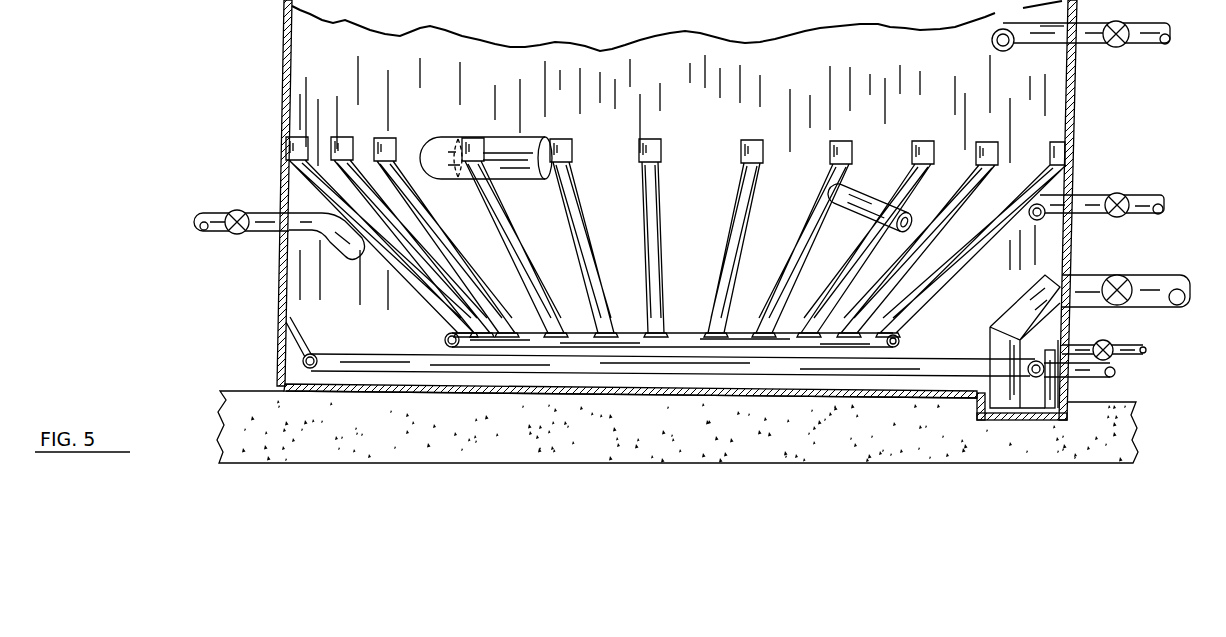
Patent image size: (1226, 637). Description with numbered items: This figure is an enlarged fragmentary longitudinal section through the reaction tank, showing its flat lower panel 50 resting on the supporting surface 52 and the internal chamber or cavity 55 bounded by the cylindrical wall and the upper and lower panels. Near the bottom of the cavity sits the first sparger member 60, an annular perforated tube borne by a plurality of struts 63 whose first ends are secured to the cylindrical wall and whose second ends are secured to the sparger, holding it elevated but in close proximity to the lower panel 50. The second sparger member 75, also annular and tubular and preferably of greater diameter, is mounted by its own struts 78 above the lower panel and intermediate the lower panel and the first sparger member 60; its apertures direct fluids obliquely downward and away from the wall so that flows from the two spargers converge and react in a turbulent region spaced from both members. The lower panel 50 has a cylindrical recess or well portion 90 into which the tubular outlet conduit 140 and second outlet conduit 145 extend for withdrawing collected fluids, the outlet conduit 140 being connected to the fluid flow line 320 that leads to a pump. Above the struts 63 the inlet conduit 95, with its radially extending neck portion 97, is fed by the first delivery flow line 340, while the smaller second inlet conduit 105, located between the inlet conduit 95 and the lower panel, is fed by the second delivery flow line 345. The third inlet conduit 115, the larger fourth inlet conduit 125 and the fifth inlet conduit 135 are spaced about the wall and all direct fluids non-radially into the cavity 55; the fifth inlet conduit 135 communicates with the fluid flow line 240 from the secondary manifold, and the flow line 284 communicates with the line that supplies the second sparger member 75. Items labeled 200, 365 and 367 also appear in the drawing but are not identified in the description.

The lower panel 50 is at (367, 388).
The supporting surface 52 is at (1120, 420).
The internal chamber or cavity 55 is at (347, 57).
The first sparger member 60 is at (678, 336).
The struts 63 is at (740, 181).
The second sparger member 75 is at (346, 356).
The struts 78 is at (301, 333).
The recess or well portion 90 is at (1003, 378).
The inlet conduit 95 is at (1043, 33).
The neck portion 97 is at (1027, 33).
The second inlet conduit 105 is at (1062, 190).
The third inlet conduit 115 is at (855, 184).
The fourth inlet conduit 125 is at (482, 147).
The fifth inlet conduit 135 is at (305, 226).
The outlet conduit 140 is at (1023, 305).
The second outlet conduit 145 is at (1047, 403).
The tank 200 is at (704, 4).
The fluid flow line 240 is at (270, 216).
The flow line 284 is at (1100, 375).
The fluid flow line 320 is at (1143, 286).
The first delivery flow line 340 is at (1088, 36).
The second delivery flow line 345 is at (1135, 198).
The drain line 365 is at (1143, 353).
The valve 367 is at (1110, 343).